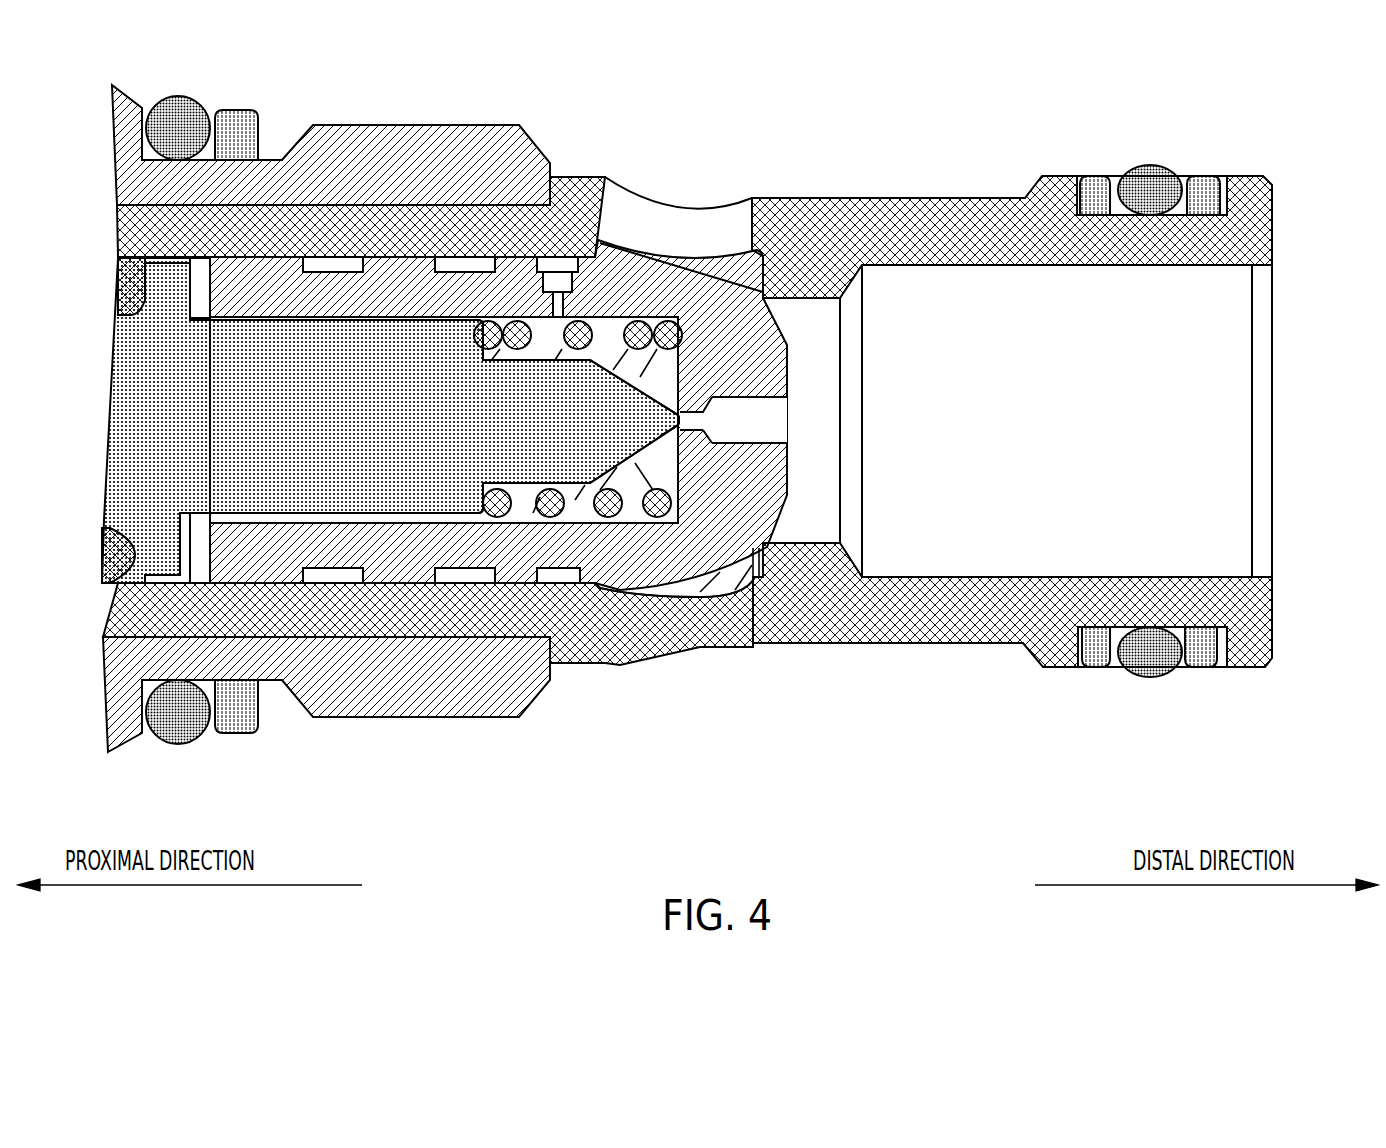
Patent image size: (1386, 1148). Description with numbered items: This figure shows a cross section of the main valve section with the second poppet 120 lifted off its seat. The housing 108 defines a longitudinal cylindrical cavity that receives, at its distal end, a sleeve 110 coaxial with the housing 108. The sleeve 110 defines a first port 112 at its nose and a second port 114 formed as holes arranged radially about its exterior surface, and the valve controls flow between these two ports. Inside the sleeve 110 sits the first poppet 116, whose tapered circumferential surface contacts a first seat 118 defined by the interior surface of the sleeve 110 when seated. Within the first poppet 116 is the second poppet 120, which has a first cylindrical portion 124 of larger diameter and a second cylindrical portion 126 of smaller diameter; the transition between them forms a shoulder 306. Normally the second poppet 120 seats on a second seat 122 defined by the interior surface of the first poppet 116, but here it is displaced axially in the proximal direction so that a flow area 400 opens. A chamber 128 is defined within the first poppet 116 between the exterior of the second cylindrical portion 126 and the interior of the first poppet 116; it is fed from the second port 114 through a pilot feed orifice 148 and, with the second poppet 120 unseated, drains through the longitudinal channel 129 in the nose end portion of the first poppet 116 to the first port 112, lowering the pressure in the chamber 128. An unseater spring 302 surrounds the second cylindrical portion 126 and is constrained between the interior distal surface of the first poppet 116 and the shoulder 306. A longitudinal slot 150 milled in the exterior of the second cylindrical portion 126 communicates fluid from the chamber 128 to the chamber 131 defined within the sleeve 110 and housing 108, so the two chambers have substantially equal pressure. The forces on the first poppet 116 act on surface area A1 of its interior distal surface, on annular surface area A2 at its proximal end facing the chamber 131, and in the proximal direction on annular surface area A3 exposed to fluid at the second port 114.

The housing 108 is at (478, 138).
The sleeve 110 is at (950, 208).
The first port 112 is at (1286, 431).
The second port 114 is at (663, 183).
The first poppet 116 is at (685, 560).
The first seat 118 is at (785, 562).
The second poppet 120 is at (332, 458).
The second seat 122 is at (694, 445).
The first cylindrical portion 124 is at (418, 462).
The second cylindrical portion 126 is at (517, 522).
The chamber 128 is at (548, 465).
The longitudinal channel 129 is at (748, 395).
The chamber 131 is at (192, 592).
The pilot feed orifice 148 is at (558, 268).
The longitudinal slot 150 is at (373, 545).
The unseater spring 302 is at (582, 328).
The shoulder 306 is at (452, 341).
The flow area 400 is at (660, 416).
The surface area A1 is at (660, 470).
The annular surface area A2 is at (198, 280).
The annular surface area A3 is at (712, 248).